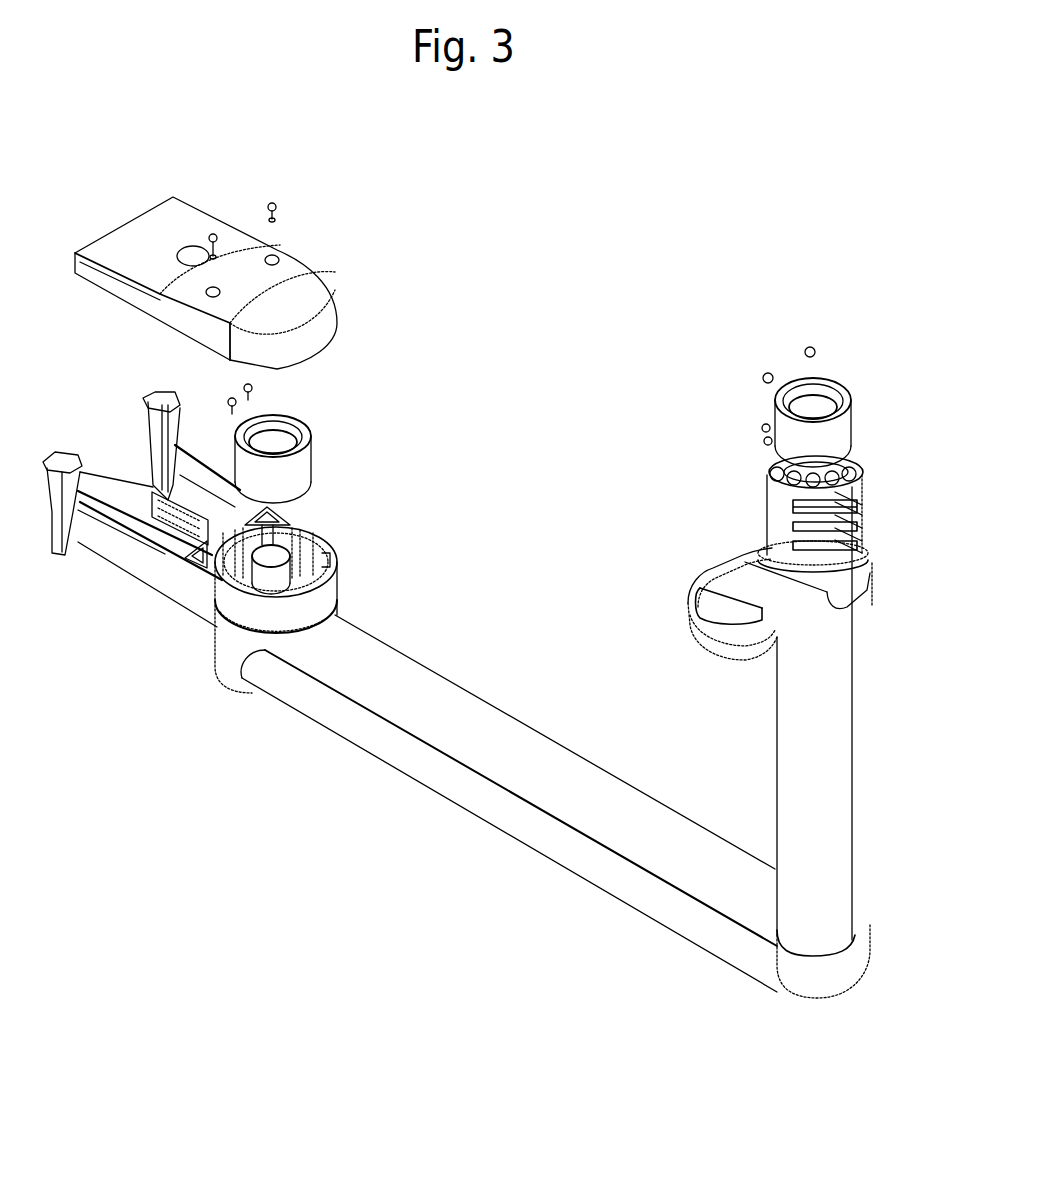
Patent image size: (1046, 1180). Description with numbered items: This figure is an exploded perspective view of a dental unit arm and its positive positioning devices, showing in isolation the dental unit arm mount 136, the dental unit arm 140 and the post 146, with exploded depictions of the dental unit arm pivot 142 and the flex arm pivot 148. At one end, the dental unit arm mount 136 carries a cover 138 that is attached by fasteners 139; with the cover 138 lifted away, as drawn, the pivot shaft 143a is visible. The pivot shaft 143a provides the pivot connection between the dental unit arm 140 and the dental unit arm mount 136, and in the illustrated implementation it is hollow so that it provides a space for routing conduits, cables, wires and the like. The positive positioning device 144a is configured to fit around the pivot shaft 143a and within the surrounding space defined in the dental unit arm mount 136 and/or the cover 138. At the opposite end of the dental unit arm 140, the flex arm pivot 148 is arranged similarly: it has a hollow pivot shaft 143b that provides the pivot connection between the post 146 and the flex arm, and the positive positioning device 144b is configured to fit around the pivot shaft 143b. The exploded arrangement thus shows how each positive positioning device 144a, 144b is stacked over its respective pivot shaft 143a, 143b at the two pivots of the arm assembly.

The dental unit arm mount 136 is at (140, 550).
The cover 138 is at (173, 218).
The fasteners 139 is at (212, 230).
The dental unit arm 140 is at (530, 755).
The dental unit arm pivot 142 is at (153, 628).
The pivot shaft 143a is at (270, 567).
The pivot shaft 143b is at (780, 467).
The positive positioning device 144a is at (310, 411).
The positive positioning device 144b is at (856, 386).
The post 146 is at (830, 848).
The flex arm pivot 148 is at (850, 321).